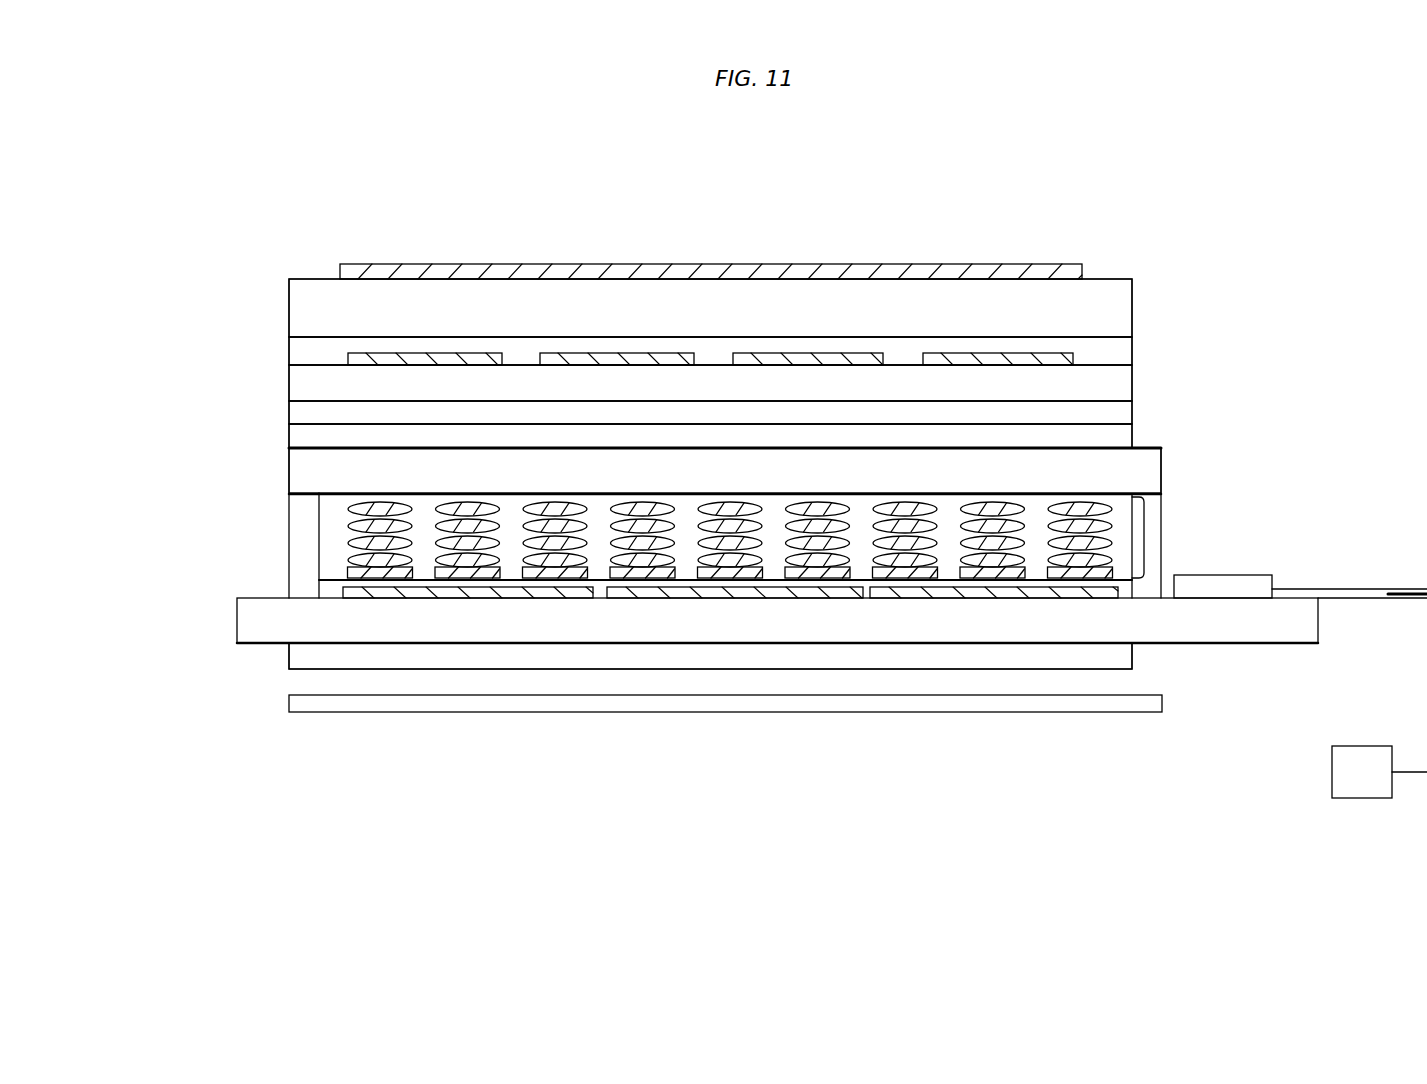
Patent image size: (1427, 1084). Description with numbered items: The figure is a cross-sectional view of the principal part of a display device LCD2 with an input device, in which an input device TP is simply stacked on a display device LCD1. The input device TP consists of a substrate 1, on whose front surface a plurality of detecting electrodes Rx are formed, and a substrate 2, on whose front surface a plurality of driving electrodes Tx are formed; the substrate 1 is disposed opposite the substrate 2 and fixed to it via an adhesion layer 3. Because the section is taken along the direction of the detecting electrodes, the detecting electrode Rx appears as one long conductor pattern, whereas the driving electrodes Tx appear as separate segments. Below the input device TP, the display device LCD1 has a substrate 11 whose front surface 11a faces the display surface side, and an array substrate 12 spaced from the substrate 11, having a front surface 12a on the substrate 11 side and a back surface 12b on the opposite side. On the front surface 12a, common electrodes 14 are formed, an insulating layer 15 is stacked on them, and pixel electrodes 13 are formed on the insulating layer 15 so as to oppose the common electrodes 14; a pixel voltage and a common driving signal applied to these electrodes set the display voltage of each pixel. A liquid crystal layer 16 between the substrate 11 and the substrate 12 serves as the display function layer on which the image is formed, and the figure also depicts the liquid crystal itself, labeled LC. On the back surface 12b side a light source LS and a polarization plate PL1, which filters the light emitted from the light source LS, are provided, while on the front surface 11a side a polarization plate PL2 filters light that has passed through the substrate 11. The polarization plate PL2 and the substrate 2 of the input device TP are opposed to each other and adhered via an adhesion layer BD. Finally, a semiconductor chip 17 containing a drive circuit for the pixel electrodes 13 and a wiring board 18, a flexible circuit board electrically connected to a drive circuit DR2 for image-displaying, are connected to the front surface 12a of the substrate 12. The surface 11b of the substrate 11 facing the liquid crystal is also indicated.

The substrate 1 is at (311, 310).
The substrate 2 is at (312, 385).
The adhesion layer 3 is at (309, 355).
The substrate 11 is at (320, 470).
The front surface 11a is at (340, 447).
The rear surface layer of counter substrate 11b is at (338, 496).
The substrate 12 is at (280, 619).
The front surface 12a is at (340, 597).
The back surface 12b is at (345, 645).
The pixel electrode 13 is at (368, 572).
The common electrode 14 is at (487, 595).
The insulating layer 15 is at (599, 580).
The liquid crystal layer 16 is at (1143, 537).
The semiconductor chip 17 is at (1218, 583).
The wiring board 18 is at (1355, 591).
The input device TP is at (235, 267).
The detecting electrode Rx is at (403, 277).
The driving electrode Tx is at (452, 353).
The adhesion layer BD is at (698, 418).
The polarization plate PL2 is at (1124, 432).
The polarization plate PL1 is at (942, 662).
The liquid crystal layer LC is at (1103, 530).
The light source LS is at (838, 703).
The display device LCD1 is at (186, 423).
The display device with an input device LCD2 is at (1146, 240).
The drive circuit DR2 is at (1348, 775).